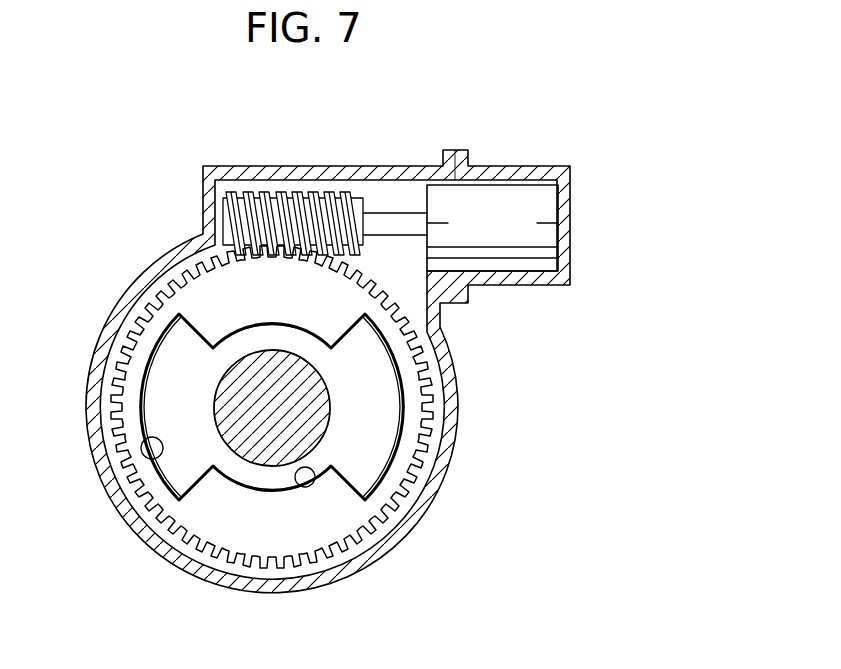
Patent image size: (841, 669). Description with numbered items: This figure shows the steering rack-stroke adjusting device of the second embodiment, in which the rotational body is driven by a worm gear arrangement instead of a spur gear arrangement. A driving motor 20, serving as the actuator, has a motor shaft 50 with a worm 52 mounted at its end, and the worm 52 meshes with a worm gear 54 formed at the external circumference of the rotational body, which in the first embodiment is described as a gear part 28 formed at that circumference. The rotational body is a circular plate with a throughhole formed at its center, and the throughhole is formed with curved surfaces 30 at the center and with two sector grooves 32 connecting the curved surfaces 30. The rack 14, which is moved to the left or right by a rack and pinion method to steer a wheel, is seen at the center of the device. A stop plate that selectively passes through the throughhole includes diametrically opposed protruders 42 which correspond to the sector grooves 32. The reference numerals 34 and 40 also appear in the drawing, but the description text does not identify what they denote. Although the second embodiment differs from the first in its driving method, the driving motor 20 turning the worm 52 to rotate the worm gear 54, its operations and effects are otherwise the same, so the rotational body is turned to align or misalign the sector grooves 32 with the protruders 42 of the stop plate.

The rack 14 is at (333, 412).
The driving motor 20 is at (510, 205).
The gear part 28 is at (132, 330).
The curved surfaces 30 is at (320, 480).
The sector grooves 32 is at (153, 458).
The gear plate 34 is at (285, 525).
The hub 40 is at (248, 473).
The protruders 42 is at (158, 378).
The motor shaft 50 is at (408, 217).
The worm 52 is at (333, 195).
The worm gear 54 is at (87, 407).